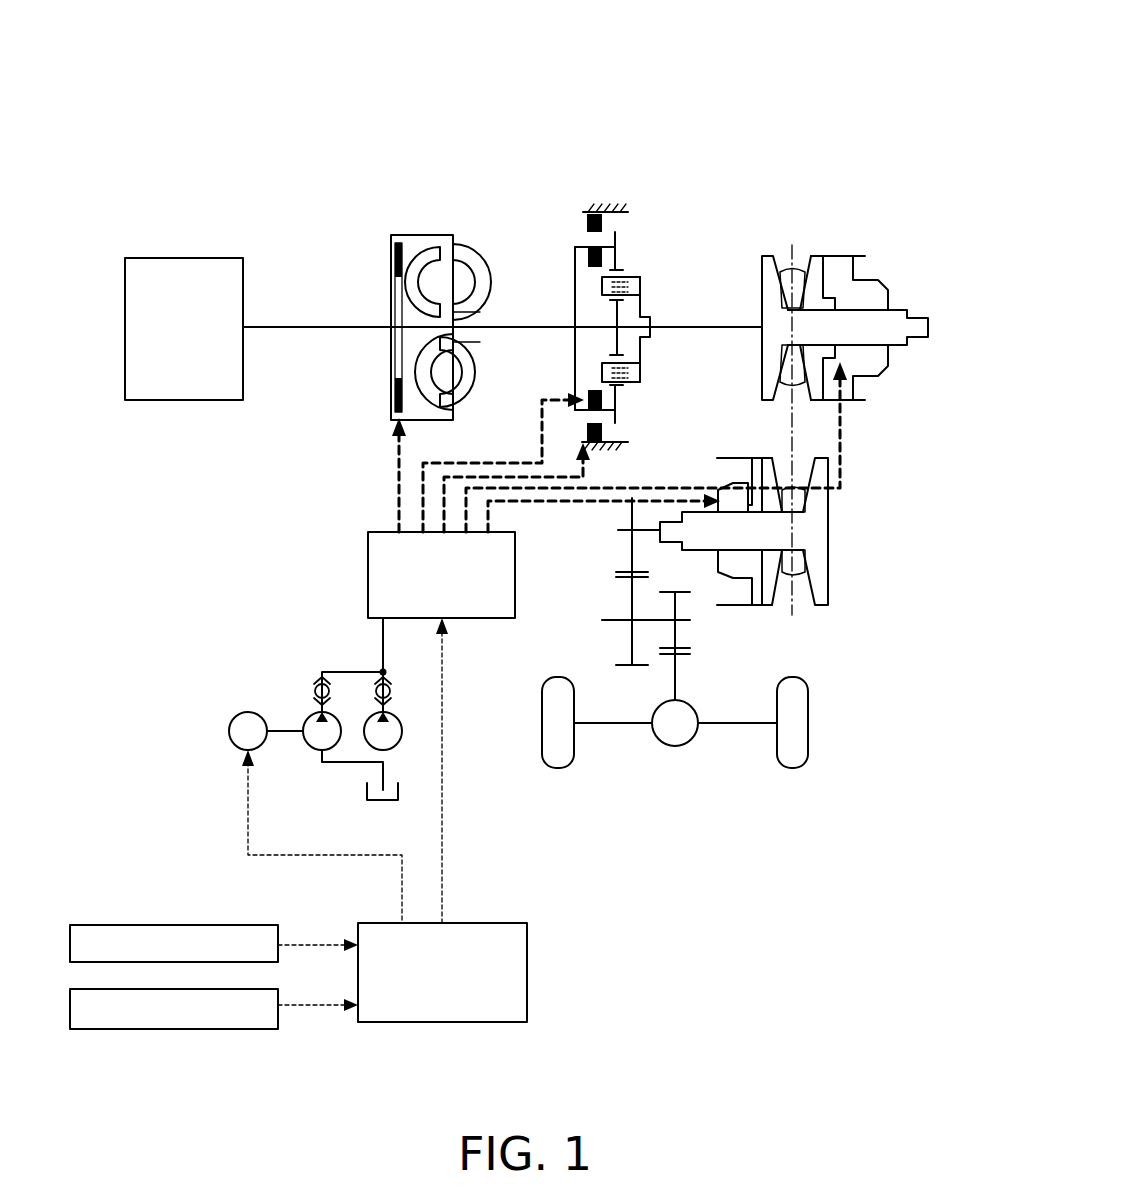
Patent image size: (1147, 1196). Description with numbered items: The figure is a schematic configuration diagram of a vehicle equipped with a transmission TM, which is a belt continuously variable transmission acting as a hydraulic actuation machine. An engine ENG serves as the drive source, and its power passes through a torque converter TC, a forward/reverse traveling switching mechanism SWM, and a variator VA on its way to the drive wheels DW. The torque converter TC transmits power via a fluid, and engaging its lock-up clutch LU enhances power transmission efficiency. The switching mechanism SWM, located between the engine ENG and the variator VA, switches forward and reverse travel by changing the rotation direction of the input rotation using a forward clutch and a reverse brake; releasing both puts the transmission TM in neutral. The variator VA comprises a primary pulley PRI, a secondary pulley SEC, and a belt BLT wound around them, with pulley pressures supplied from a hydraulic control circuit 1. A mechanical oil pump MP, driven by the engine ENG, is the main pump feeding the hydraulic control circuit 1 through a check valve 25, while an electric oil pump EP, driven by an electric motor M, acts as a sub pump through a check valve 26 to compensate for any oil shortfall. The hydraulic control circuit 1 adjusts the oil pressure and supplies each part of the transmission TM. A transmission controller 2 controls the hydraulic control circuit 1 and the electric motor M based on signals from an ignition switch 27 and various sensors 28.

The transmission TM is at (893, 86).
The engine ENG is at (181, 258).
The torque converter TC is at (433, 232).
The lock-up clutch LU is at (393, 404).
The forward/reverse traveling switching mechanism SWM is at (591, 190).
The variator VA is at (825, 226).
The primary pulley PRI is at (890, 290).
The secondary pulley SEC is at (830, 551).
The belt BLT is at (795, 578).
The drive wheels DW is at (541, 723).
The hydraulic control circuit 1 is at (367, 585).
The check valve 26 is at (318, 684).
The check valve 25 is at (390, 685).
The electric oil pump EP is at (312, 748).
The mechanical oil pump MP is at (395, 748).
The electric motor M is at (248, 712).
The transmission controller 2 is at (446, 1023).
The ignition switch 27 is at (212, 924).
The various sensors 28 is at (218, 1030).